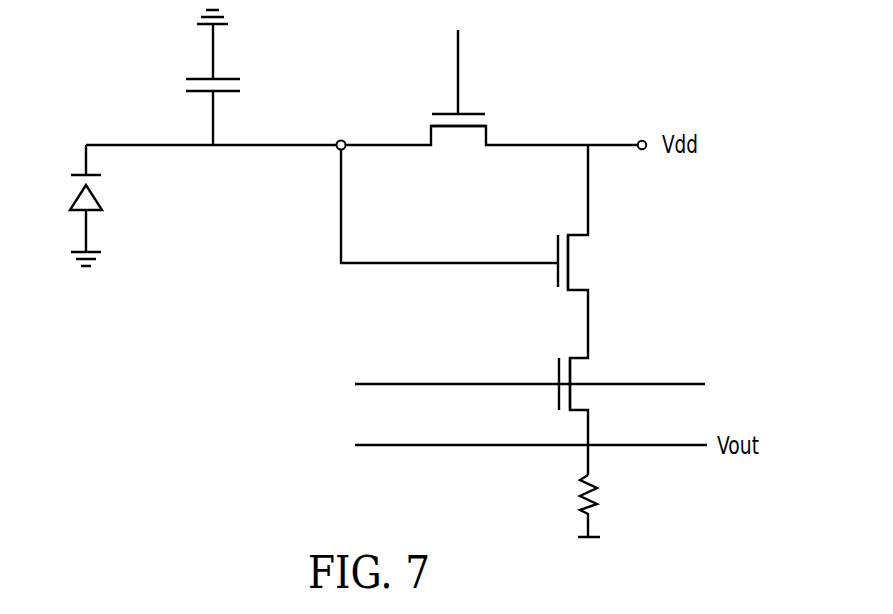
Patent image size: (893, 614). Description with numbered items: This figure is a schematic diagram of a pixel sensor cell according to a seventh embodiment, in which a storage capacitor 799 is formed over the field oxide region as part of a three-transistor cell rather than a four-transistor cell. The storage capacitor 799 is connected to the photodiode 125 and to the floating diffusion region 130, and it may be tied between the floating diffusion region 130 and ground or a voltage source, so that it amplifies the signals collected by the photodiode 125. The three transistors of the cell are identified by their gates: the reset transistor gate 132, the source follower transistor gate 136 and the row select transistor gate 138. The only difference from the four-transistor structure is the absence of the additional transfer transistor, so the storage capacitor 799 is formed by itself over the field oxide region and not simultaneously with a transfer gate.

The storage capacitor 799 is at (174, 76).
The photodiode 125 is at (110, 191).
The floating diffusion region 130 is at (344, 150).
The reset transistor gate 132 is at (478, 104).
The source follower transistor gate 136 is at (546, 243).
The row select transistor gate 138 is at (549, 368).